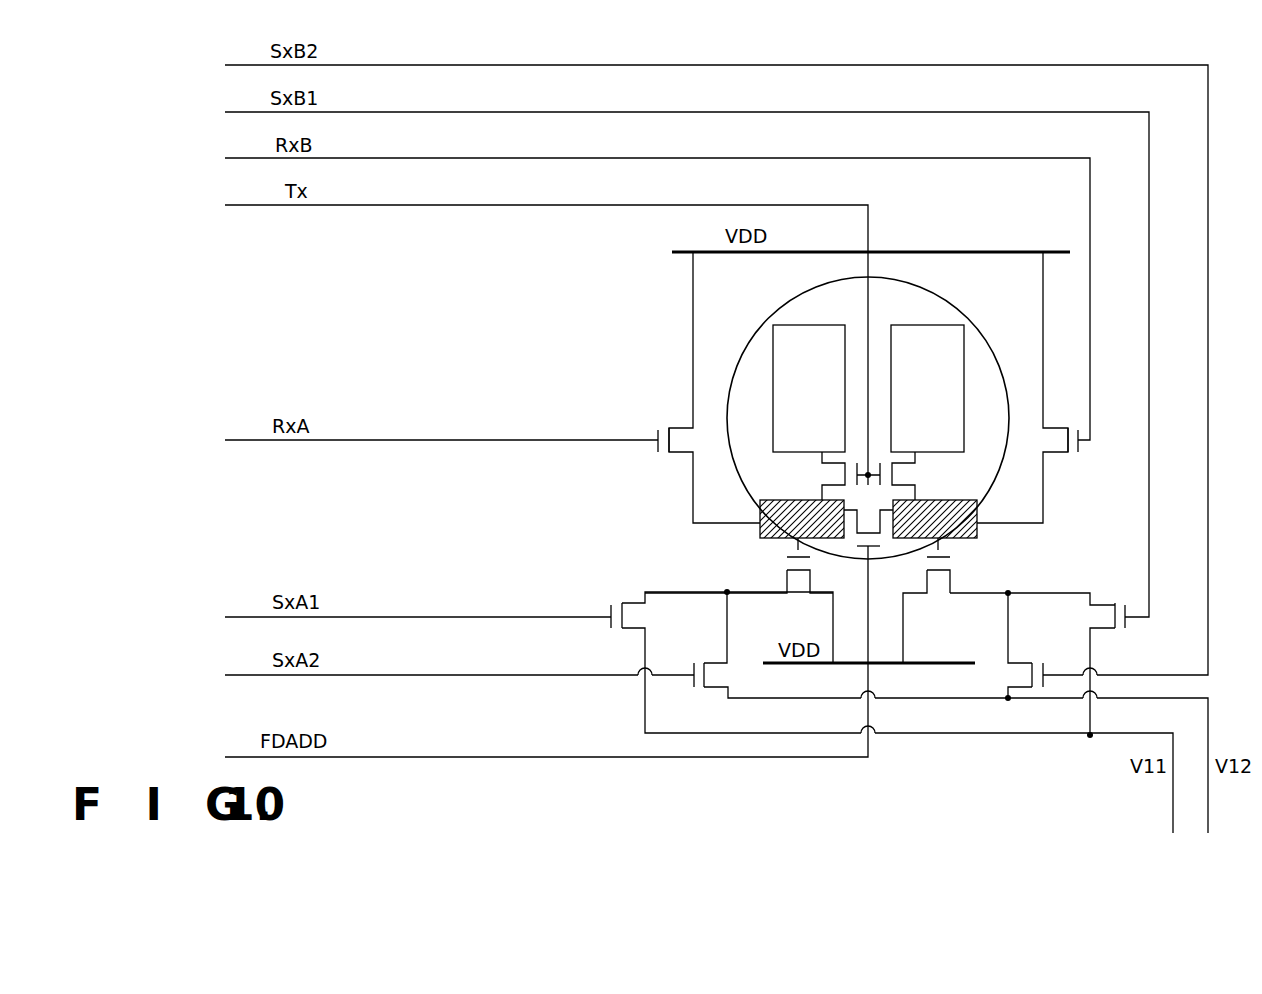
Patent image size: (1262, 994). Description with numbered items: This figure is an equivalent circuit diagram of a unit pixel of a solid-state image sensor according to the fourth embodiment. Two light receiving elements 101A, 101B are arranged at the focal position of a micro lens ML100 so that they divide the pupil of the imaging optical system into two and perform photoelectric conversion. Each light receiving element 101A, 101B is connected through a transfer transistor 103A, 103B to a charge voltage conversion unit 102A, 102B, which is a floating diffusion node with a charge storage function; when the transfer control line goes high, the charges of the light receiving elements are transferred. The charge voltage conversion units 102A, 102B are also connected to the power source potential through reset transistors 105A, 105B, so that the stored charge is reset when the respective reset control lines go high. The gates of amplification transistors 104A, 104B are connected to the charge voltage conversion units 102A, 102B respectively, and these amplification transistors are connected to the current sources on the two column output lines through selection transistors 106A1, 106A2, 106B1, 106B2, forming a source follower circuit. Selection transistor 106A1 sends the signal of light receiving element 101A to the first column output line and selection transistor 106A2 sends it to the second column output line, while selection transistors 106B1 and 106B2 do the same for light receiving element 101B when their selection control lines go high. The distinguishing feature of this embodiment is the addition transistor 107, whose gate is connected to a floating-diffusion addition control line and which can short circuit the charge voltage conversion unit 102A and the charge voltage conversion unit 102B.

The micro lens ML100 is at (995, 295).
The light receiving element 101A is at (809, 388).
The light receiving element 101B is at (927, 388).
The charge voltage conversion unit 102A is at (756, 395).
The charge voltage conversion unit 102B is at (980, 395).
The transfer transistor 103A is at (825, 477).
The transfer transistor 103B is at (903, 474).
The amplification transistor 104A is at (785, 565).
The amplification transistor 104B is at (950, 564).
The reset transistor 105A is at (663, 456).
The reset transistor 105B is at (1075, 457).
The selection transistor 106A1 is at (618, 602).
The selection transistor 106A2 is at (702, 658).
The selection transistor 106B1 is at (1120, 602).
The selection transistor 106B2 is at (1053, 643).
The addition transistor 107 is at (868, 515).